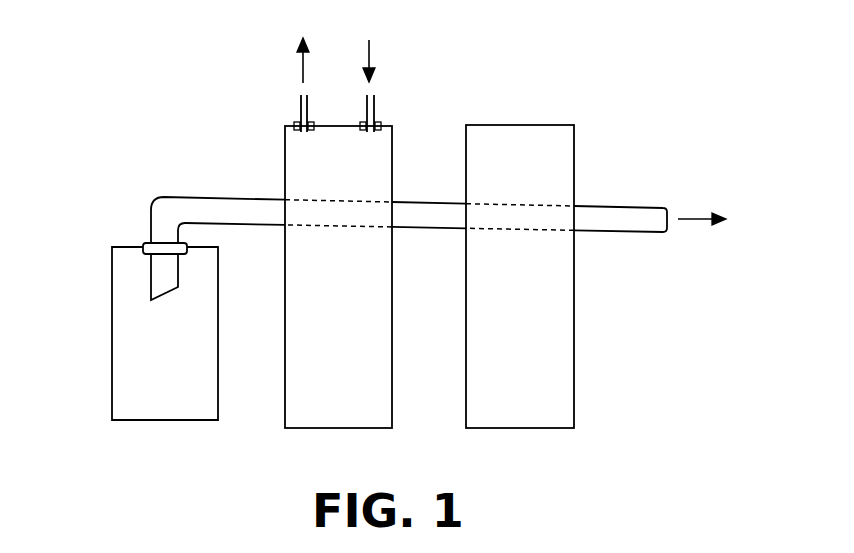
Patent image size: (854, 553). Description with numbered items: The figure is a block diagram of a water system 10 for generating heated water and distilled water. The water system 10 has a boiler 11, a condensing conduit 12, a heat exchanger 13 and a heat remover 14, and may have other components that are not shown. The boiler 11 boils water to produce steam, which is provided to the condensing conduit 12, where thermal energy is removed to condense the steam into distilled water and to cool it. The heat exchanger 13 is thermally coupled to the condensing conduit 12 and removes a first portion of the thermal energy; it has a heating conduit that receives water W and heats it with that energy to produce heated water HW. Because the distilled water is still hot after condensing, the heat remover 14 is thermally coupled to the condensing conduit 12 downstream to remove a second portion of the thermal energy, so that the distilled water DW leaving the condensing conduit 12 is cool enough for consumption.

The water system 10 is at (90, 75).
The boiler 11 is at (111, 350).
The condensing conduit 12 is at (180, 196).
The heat exchanger 13 is at (285, 160).
The heat remover 14 is at (574, 163).